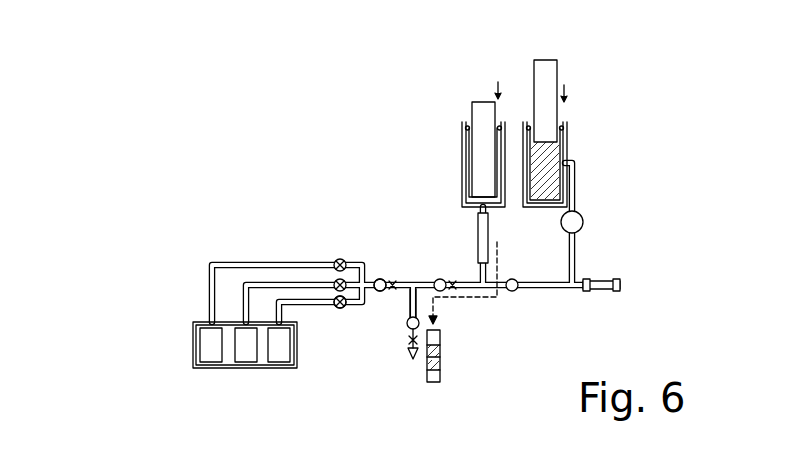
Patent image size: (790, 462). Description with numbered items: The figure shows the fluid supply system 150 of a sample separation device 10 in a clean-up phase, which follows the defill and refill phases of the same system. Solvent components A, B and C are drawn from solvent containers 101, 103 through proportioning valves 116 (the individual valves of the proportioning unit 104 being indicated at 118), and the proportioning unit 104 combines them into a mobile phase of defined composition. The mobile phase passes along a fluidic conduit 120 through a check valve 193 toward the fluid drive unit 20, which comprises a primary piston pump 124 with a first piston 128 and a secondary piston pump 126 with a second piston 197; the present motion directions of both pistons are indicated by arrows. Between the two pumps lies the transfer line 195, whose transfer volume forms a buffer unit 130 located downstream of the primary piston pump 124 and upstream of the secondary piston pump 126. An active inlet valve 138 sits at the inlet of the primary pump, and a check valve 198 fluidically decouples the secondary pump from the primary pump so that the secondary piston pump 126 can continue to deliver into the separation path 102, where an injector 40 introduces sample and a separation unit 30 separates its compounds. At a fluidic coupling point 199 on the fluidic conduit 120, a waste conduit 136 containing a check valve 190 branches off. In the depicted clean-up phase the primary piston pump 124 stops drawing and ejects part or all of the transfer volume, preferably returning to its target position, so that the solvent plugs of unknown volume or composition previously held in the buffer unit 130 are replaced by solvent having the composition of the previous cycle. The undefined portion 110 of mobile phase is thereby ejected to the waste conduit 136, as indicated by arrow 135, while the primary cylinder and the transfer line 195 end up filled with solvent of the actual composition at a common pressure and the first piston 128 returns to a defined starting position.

The sample separation device 10 is at (167, 156).
The fluid drive unit 20 is at (580, 102).
The separation unit 30 is at (605, 283).
The injector 40 is at (583, 218).
The solvent container 101 is at (157, 350).
The solvent container 103 is at (215, 373).
The separation path 102 is at (616, 235).
The proportioning unit 104 is at (345, 222).
The undefined portion 110 is at (444, 343).
The proportioning valve 116 is at (340, 318).
The reservoir valves 118 is at (212, 265).
The fluidic conduit 120 is at (381, 278).
The primary piston pump 124 is at (456, 144).
The secondary piston pump 126 is at (580, 140).
The first piston 128 is at (483, 101).
The buffer unit 130 is at (468, 226).
The arrow 135 is at (492, 290).
The waste conduit 136 is at (411, 352).
The active inlet valve 138 is at (440, 278).
The fluid supply system 150 is at (213, 62).
The check valve 190 is at (420, 325).
The check valve 193 is at (383, 292).
The transfer line 195 is at (487, 211).
The second piston 197 is at (560, 63).
The check valve 198 is at (516, 292).
The fluidic coupling point 199 is at (407, 283).